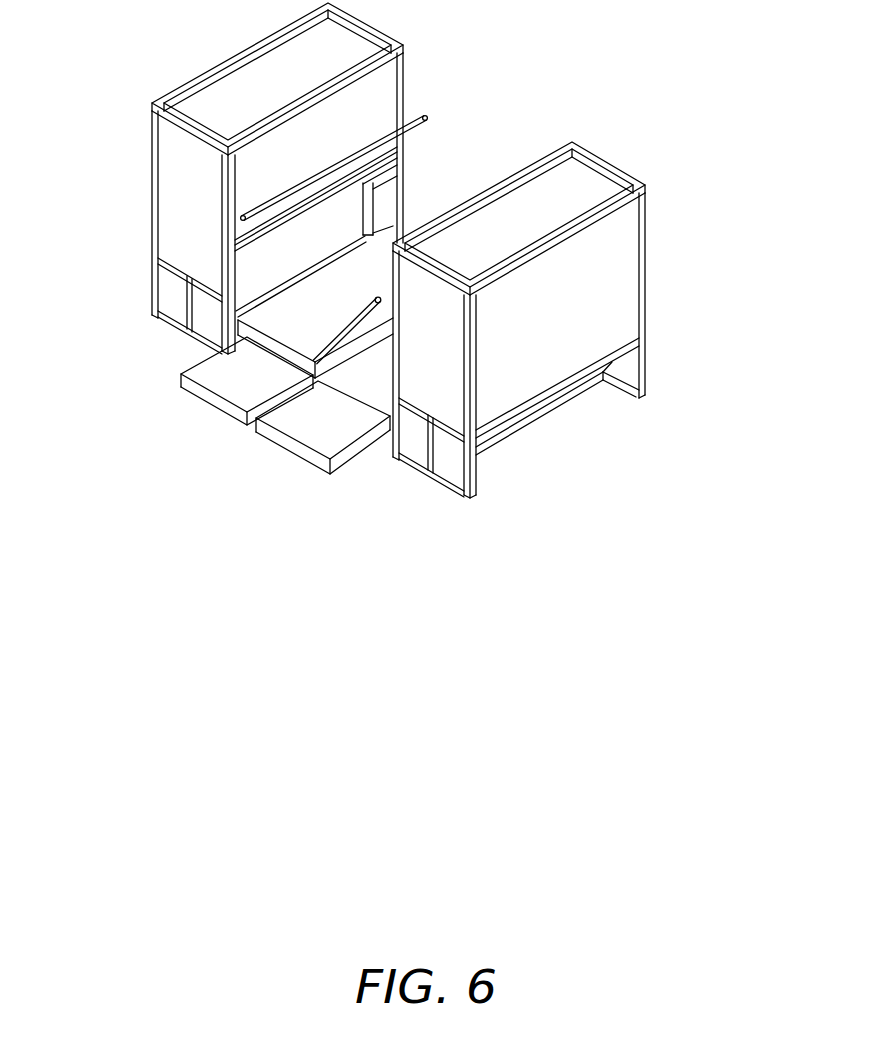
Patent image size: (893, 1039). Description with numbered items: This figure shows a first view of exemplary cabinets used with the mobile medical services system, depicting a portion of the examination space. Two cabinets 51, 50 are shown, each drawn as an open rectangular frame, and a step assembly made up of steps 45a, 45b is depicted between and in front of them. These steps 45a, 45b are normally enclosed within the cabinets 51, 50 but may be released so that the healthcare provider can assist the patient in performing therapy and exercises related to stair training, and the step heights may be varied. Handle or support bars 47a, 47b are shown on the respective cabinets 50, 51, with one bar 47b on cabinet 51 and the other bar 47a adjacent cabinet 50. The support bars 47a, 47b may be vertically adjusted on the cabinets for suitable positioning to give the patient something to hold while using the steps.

The cabinet 51 is at (172, 167).
The cabinet 50 is at (646, 257).
The support bar 47a is at (382, 307).
The support bar 47b is at (421, 113).
The step 45a is at (325, 447).
The step 45b is at (222, 374).